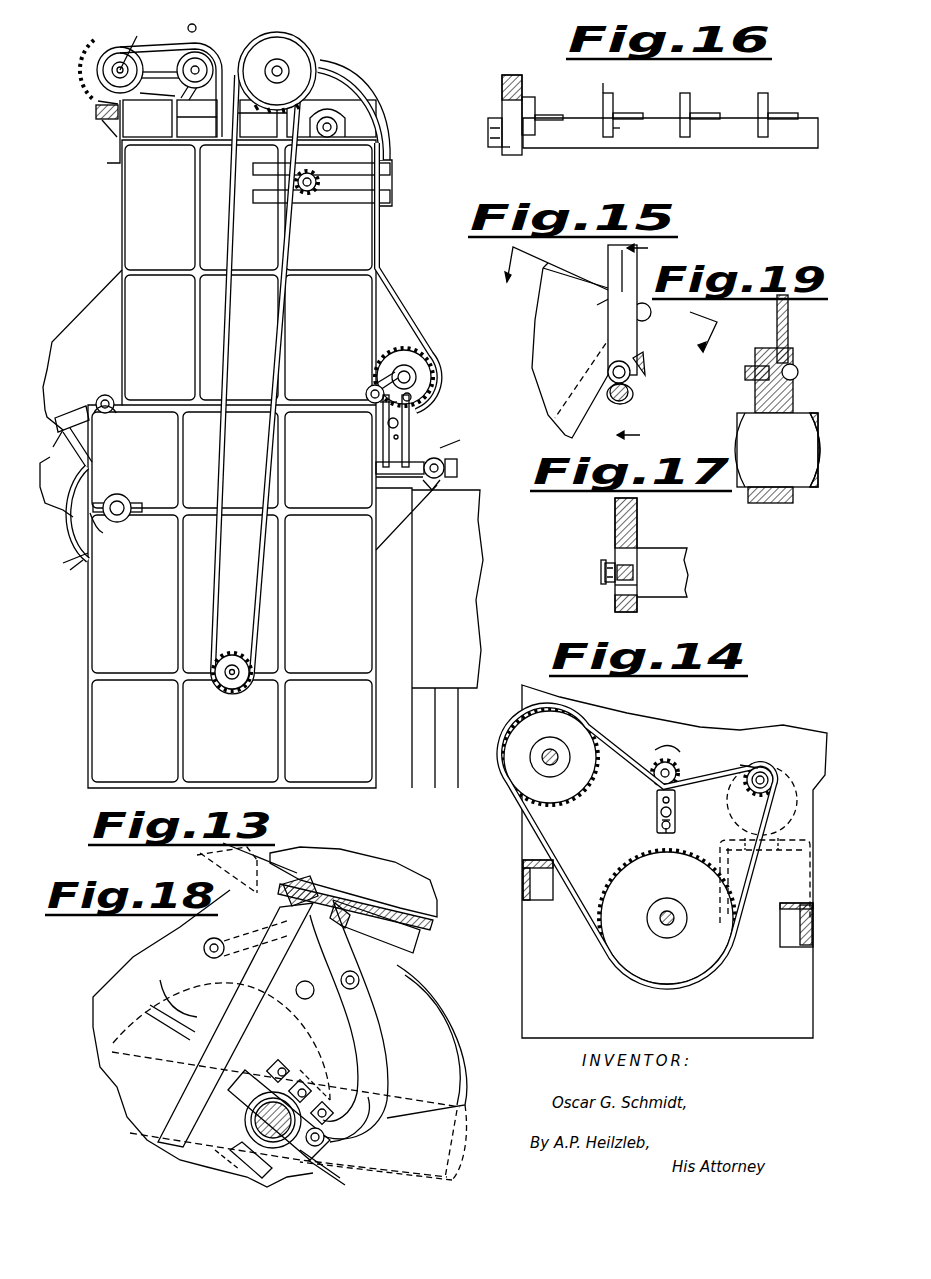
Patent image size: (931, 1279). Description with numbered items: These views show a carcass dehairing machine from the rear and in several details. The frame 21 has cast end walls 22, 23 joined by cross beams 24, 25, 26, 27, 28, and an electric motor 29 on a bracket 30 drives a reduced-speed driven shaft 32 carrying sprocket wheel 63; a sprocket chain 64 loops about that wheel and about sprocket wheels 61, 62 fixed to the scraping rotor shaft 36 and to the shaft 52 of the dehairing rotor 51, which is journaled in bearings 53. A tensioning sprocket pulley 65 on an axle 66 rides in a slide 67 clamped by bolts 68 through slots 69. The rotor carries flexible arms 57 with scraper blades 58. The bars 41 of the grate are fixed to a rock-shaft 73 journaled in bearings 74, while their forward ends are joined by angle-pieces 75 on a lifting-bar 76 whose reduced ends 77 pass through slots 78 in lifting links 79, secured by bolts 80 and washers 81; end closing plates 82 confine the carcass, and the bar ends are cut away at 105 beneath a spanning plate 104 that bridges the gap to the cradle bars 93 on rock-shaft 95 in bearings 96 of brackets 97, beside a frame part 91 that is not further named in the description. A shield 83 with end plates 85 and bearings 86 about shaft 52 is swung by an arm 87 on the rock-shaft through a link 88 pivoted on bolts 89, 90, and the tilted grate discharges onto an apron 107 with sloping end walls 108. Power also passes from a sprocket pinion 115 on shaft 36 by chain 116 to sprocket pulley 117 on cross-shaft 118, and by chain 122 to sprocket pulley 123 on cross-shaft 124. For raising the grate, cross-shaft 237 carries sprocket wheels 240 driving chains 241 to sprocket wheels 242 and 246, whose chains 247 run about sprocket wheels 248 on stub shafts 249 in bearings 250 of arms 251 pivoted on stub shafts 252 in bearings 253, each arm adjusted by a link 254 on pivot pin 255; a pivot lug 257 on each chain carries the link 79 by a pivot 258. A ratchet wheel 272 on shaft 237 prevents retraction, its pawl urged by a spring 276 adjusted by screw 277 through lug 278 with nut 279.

In FIG. 13, the frame 21 is at (380, 160).
In FIG. 13, the end wall 22 is at (360, 232).
In FIG. 14, the end wall 23 is at (640, 720).
In FIG. 13, the cross beam 24 is at (392, 180).
In FIG. 14, the cross beam 25 is at (523, 872).
In FIG. 13, the cross beam 26 is at (107, 150).
In FIG. 13, the cross beam 27 is at (72, 429).
In FIG. 18, the cross beam 27 is at (361, 918).
In FIG. 14, the cross beam 28 is at (798, 935).
In FIG. 14, the electric motor 29 is at (778, 840).
In FIG. 14, the bracket 30 is at (803, 870).
In FIG. 14, the driven shaft 32 is at (770, 774).
In FIG. 13, the shaft 36 is at (232, 675).
In FIG. 14, the shaft 36 is at (672, 925).
In FIG. 18, the bars 41 is at (240, 1000).
In FIG. 16, the bars 41 is at (599, 79).
In FIG. 15, the bars 41 is at (570, 350).
In FIG. 13, the dehairing rotor 51 is at (68, 530).
In FIG. 18, the dehairing rotor 51 is at (196, 1150).
In FIG. 13, the shaft 52 is at (125, 500).
In FIG. 18, the shaft 52 is at (268, 1090).
In FIG. 19, the shaft 52 is at (742, 428).
In FIG. 14, the shaft 52 is at (558, 762).
In FIG. 13, the bearings 53 is at (124, 514).
In FIG. 18, the flexible arms 57 is at (170, 1027).
In FIG. 18, the scraper blades 58 is at (182, 1020).
In FIG. 14, the sprocket wheel 61 is at (633, 962).
In FIG. 13, the sprocket wheel 62 is at (103, 533).
In FIG. 14, the sprocket wheel 62 is at (578, 745).
In FIG. 14, the sprocket wheel 63 is at (748, 770).
In FIG. 13, the sprocket chain 64 is at (70, 512).
In FIG. 14, the sprocket chain 64 is at (580, 905).
In FIG. 14, the tensioning sprocket pulley 65 is at (667, 745).
In FIG. 14, the axle 66 is at (676, 770).
In FIG. 14, the slide 67 is at (675, 812).
In FIG. 14, the clamp bolts 68 is at (660, 826).
In FIG. 14, the slots 69 is at (672, 830).
In FIG. 13, the rock-shaft 73 is at (106, 414).
In FIG. 18, the rock-shaft 73 is at (312, 882).
In FIG. 13, the bearings 74 is at (100, 396).
In FIG. 16, the angle-pieces 75 is at (614, 108).
In FIG. 16, the lifting-bar 76 is at (662, 140).
In FIG. 15, the lifting-bar 76 is at (650, 361).
In FIG. 17, the lifting-bar 76 is at (658, 560).
In FIG. 17, the reduced ends 77 is at (636, 574).
In FIG. 15, the slots 78 is at (626, 404).
In FIG. 17, the slots 78 is at (618, 590).
In FIG. 13, the lifting links 79 is at (395, 474).
In FIG. 16, the lifting links 79 is at (518, 80).
In FIG. 15, the lifting links 79 is at (596, 304).
In FIG. 17, the lifting links 79 is at (634, 525).
In FIG. 16, the bolts 80 is at (490, 122).
In FIG. 15, the bolts 80 is at (631, 374).
In FIG. 17, the bolts 80 is at (605, 578).
In FIG. 16, the washers 81 is at (500, 150).
In FIG. 15, the washers 81 is at (630, 393).
In FIG. 17, the washers 81 is at (612, 562).
In FIG. 16, the end closing plates 82 is at (530, 100).
In FIG. 15, the end closing plates 82 is at (560, 282).
In FIG. 18, the shield 83 is at (462, 1082).
In FIG. 18, the end plates 85 is at (425, 1026).
In FIG. 19, the end plates 85 is at (788, 328).
In FIG. 18, the bearings 86 is at (262, 1080).
In FIG. 19, the bearings 86 is at (770, 503).
In FIG. 18, the arm 87 is at (354, 918).
In FIG. 18, the link 88 is at (372, 1078).
In FIG. 18, the bolt 89 is at (322, 1145).
In FIG. 18, the bolt 90 is at (355, 985).
In FIG. 13, the column 91 is at (465, 536).
In FIG. 13, the bars 93 is at (440, 488).
In FIG. 13, the rock-shaft 95 is at (445, 465).
In FIG. 13, the bearings 96 is at (457, 472).
In FIG. 13, the brackets 97 is at (418, 505).
In FIG. 13, the spanning plate 104 is at (467, 439).
In FIG. 16, the cut away 105 is at (631, 132).
In FIG. 15, the cut away 105 is at (657, 312).
In FIG. 18, the discharge apron 107 is at (355, 897).
In FIG. 13, the end walls 108 is at (85, 325).
In FIG. 13, the sprocket pinion 115 is at (232, 655).
In FIG. 13, the sprocket chain 116 is at (222, 500).
In FIG. 13, the sprocket pulley 117 is at (300, 66).
In FIG. 13, the cross-shaft 118 is at (278, 83).
In FIG. 13, the sprocket chain 122 is at (335, 72).
In FIG. 13, the sprocket pulley 123 is at (367, 112).
In FIG. 13, the cross-shaft 124 is at (328, 117).
In FIG. 13, the cross-shaft 237 is at (137, 41).
In FIG. 13, the sprocket wheels 240 is at (110, 64).
In FIG. 13, the sprocket chains 241 is at (158, 70).
In FIG. 13, the sprocket wheels 242 is at (197, 52).
In FIG. 13, the sprocket wheels 246 is at (222, 45).
In FIG. 13, the sprocket chains 247 is at (262, 36).
In FIG. 13, the sprocket wheels 248 is at (410, 356).
In FIG. 13, the stub shafts 249 is at (410, 375).
In FIG. 13, the bearings 250 is at (410, 380).
In FIG. 13, the arms 251 is at (380, 383).
In FIG. 13, the stub shafts 252 is at (366, 393).
In FIG. 13, the bearings 253 is at (380, 404).
In FIG. 13, the link 254 is at (408, 450).
In FIG. 13, the pivot pin 255 is at (412, 399).
In FIG. 13, the pivot lug 257 is at (390, 425).
In FIG. 13, the pivot 258 is at (352, 460).
In FIG. 13, the ratchet wheel 272 is at (112, 50).
In FIG. 13, the spring 276 is at (147, 118).
In FIG. 13, the adjusting screw 277 is at (98, 102).
In FIG. 13, the lug 278 is at (104, 124).
In FIG. 13, the nut 279 is at (96, 112).